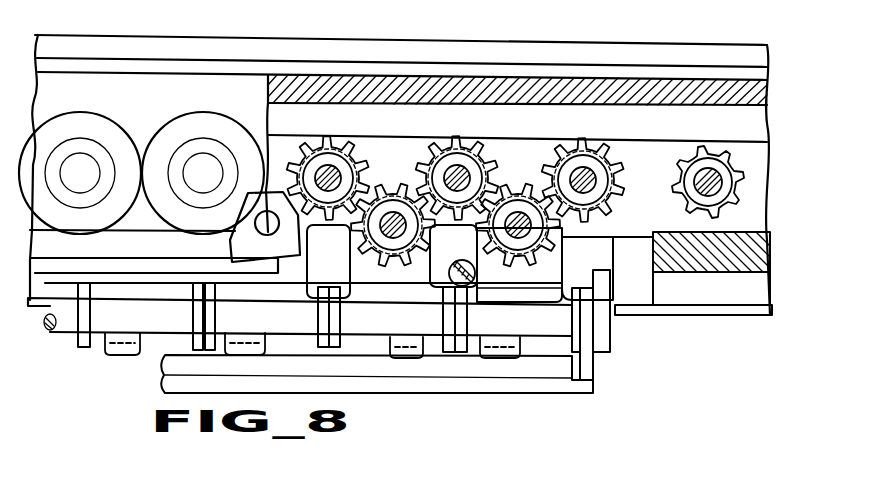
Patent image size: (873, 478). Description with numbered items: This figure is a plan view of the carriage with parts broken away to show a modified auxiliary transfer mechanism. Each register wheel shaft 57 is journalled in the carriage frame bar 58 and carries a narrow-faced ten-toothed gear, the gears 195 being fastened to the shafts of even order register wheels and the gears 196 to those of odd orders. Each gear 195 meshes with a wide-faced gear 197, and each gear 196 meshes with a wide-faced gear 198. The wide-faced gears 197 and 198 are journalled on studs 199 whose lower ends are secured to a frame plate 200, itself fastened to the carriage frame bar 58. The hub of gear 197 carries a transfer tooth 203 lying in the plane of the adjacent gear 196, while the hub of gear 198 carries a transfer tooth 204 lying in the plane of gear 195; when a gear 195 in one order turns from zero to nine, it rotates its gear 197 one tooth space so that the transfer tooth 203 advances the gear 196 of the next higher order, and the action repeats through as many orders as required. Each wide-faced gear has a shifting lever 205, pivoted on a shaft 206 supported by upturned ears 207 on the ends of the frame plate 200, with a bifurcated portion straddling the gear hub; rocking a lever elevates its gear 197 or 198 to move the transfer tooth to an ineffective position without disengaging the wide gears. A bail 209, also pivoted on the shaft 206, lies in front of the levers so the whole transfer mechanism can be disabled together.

The carriage frame bar 58 is at (678, 43).
The narrow-faced ten-toothed gear 195 is at (328, 138).
The narrow-faced ten-toothed gear 196 is at (493, 118).
The wide-faced gear 197 is at (560, 150).
The register wheel shaft 57 is at (583, 178).
The transfer tooth 204 is at (372, 194).
The transfer tooth 203 is at (512, 190).
The wide-faced gear 198 is at (344, 240).
The stud 199 is at (372, 276).
The frame plate 200 is at (568, 275).
The shifting lever 205 is at (362, 290).
The shaft 206 is at (566, 331).
The upturned ear 207 is at (598, 348).
The bail 209 is at (553, 376).